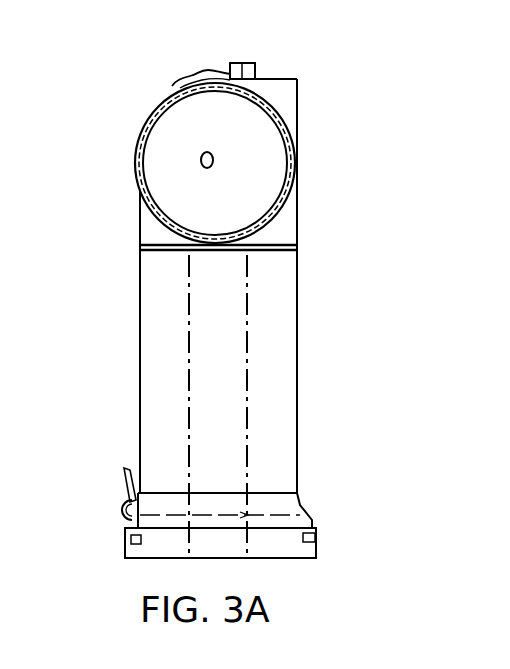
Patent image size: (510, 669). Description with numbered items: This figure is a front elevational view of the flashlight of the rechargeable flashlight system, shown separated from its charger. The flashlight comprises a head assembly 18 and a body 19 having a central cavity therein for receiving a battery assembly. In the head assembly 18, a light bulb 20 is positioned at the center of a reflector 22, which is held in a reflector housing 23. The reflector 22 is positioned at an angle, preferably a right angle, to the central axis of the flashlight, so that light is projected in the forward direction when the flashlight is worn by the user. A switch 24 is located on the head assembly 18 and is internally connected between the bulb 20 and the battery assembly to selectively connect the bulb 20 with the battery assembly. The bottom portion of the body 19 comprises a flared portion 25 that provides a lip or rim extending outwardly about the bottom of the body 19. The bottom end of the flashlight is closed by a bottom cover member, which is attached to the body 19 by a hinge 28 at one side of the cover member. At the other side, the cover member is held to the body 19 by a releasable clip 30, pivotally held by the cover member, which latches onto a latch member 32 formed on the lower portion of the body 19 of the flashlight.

The head assembly 18 is at (303, 180).
The body 19 is at (315, 404).
The light bulb 20 is at (218, 136).
The reflector 22 is at (262, 158).
The reflector housing 23 is at (150, 112).
The switch 24 is at (241, 62).
The flange band 25 is at (316, 514).
The hinge 28 is at (318, 540).
The releasable clip 30 is at (120, 468).
The latch member 32 is at (118, 506).